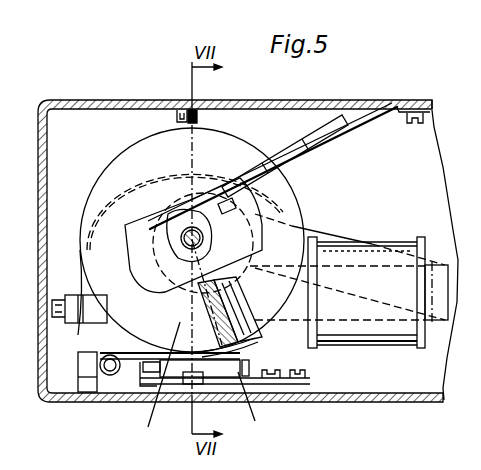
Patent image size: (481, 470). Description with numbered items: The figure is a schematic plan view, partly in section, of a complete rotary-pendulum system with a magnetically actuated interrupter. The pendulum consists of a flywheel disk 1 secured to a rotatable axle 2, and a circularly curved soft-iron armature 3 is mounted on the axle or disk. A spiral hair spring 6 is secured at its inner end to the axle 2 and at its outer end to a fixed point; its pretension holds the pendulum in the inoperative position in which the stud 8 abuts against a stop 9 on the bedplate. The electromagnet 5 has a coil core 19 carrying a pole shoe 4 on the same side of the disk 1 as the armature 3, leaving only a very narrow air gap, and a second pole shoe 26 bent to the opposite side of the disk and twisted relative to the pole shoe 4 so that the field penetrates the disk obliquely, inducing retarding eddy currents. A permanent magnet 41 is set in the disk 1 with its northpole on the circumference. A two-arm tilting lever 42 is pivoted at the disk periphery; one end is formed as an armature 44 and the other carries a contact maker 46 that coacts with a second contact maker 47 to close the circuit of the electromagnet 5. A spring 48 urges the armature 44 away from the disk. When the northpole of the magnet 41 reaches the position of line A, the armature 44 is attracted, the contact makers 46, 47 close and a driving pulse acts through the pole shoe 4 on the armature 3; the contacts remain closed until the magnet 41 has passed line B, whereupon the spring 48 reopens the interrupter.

The disk 1 is at (113, 193).
The axle 2 is at (192, 243).
The soft-iron armature 3 is at (153, 275).
The pole shoe 4 is at (292, 228).
The electromagnet 5 is at (352, 268).
The spiral hair spring 6 is at (77, 296).
The stud 8 is at (197, 113).
The stop 9 is at (177, 110).
The coil core 19 is at (440, 294).
The pole shoe 26 is at (302, 247).
The permanent magnet 41 is at (245, 331).
The tilting lever 42 is at (192, 362).
The armature 44 is at (253, 347).
The contact maker 46 is at (192, 384).
The contact maker 47 is at (200, 386).
The spring 48 is at (132, 357).
The line A is at (251, 406).
The line B is at (158, 385).